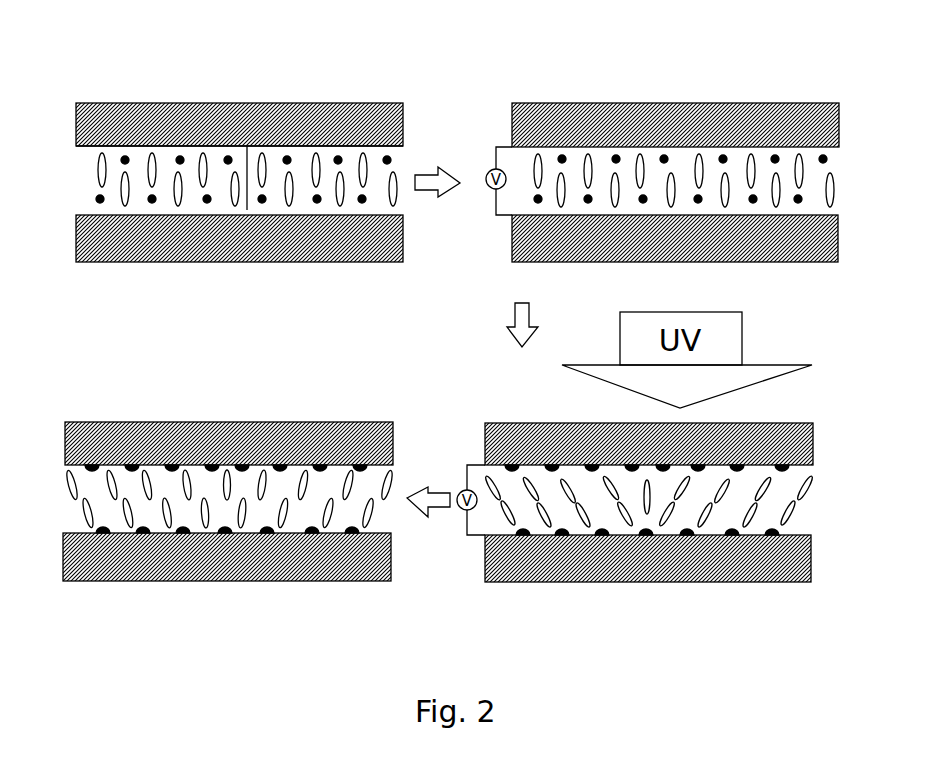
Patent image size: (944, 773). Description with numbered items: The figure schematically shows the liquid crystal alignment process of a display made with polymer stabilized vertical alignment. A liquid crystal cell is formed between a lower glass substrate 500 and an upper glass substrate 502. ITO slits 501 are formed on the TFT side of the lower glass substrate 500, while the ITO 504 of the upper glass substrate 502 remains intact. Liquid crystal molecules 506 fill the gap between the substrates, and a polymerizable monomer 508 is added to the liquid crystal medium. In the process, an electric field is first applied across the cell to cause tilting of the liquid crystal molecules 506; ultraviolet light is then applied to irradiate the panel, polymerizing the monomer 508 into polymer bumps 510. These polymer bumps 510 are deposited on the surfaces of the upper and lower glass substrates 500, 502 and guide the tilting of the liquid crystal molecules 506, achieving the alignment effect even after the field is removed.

The lower glass substrate 500 is at (78, 240).
The ITO slits 501 is at (247, 146).
The upper glass substrate 502 is at (122, 120).
The ITO 504 is at (316, 146).
The liquid crystal molecules 506 is at (363, 165).
The polymerizable monomer 508 is at (178, 160).
The polymer bumps 510 is at (648, 540).